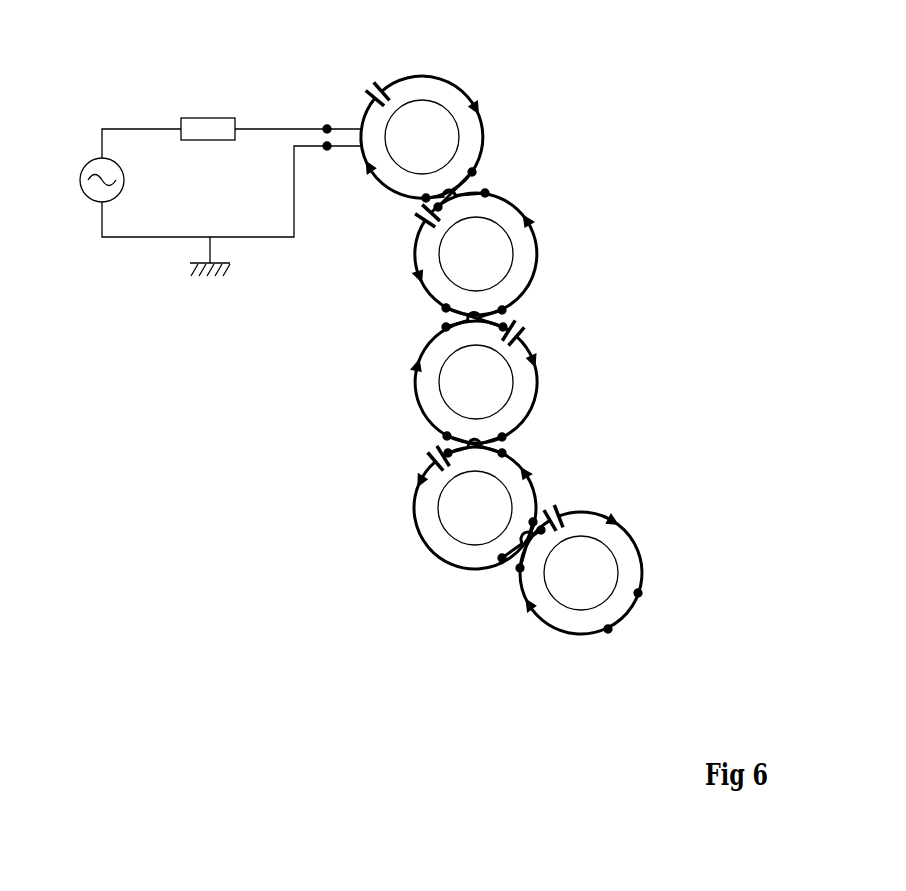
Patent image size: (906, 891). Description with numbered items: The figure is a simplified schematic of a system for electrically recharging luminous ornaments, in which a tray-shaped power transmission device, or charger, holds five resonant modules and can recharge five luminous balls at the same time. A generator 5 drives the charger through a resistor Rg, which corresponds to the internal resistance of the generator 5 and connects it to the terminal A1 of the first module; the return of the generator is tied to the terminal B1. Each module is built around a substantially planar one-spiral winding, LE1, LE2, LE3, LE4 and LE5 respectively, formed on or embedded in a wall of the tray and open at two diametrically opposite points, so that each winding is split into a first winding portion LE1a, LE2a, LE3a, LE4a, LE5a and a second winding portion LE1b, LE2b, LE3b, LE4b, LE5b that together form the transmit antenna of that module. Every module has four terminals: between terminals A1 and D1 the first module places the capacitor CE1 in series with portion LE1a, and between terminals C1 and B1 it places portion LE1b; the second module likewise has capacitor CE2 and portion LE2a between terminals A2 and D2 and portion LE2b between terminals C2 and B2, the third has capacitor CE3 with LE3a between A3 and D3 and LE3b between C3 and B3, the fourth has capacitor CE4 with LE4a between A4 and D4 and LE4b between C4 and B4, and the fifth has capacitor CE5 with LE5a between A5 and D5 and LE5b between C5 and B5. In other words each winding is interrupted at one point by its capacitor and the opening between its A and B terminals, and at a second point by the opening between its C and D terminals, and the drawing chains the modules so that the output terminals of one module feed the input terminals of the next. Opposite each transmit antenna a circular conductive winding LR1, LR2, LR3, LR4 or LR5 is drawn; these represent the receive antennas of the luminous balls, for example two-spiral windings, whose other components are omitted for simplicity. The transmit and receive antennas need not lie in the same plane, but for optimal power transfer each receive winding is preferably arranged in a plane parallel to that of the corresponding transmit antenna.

The generator 5 is at (80, 177).
The resistor Rg is at (206, 118).
The terminal A1 is at (327, 129).
The terminal B1 is at (327, 146).
The terminal C1 is at (426, 198).
The terminal D1 is at (472, 172).
The capacitor CE1 is at (372, 90).
The winding LE1 is at (473, 102).
The first winding portion LE1a is at (447, 80).
The second winding portion LE1b is at (385, 183).
The circular conductive winding LR1 is at (458, 133).
The terminal A2 is at (438, 207).
The terminal B2 is at (485, 193).
The terminal C2 is at (502, 310).
The terminal D2 is at (446, 308).
The capacitor CE2 is at (428, 220).
The winding LE2 is at (537, 248).
The first winding portion LE2a is at (527, 222).
The second winding portion LE2b is at (433, 297).
The circular conductive winding LR2 is at (510, 270).
The terminal A3 is at (503, 327).
The terminal B3 is at (446, 327).
The terminal C3 is at (447, 436).
The terminal D3 is at (502, 437).
The capacitor CE3 is at (523, 333).
The winding LE3 is at (537, 393).
The first winding portion LE3a is at (537, 370).
The second winding portion LE3b is at (415, 385).
The circular conductive winding LR3 is at (507, 402).
The terminal A4 is at (448, 453).
The terminal B4 is at (502, 453).
The terminal C4 is at (533, 522).
The terminal D4 is at (502, 558).
The capacitor CE4 is at (437, 452).
The winding LE4 is at (416, 490).
The first winding portion LE4a is at (524, 470).
The second winding portion LE4b is at (414, 512).
The circular conductive winding LR4 is at (445, 530).
The terminal A5 is at (541, 530).
The terminal B5 is at (520, 568).
The terminal C5 is at (608, 629).
The terminal D5 is at (638, 593).
The capacitor CE5 is at (552, 514).
The winding LE5 is at (624, 528).
The first winding portion LE5a is at (638, 548).
The second winding portion LE5b is at (538, 618).
The circular conductive winding LR5 is at (618, 575).